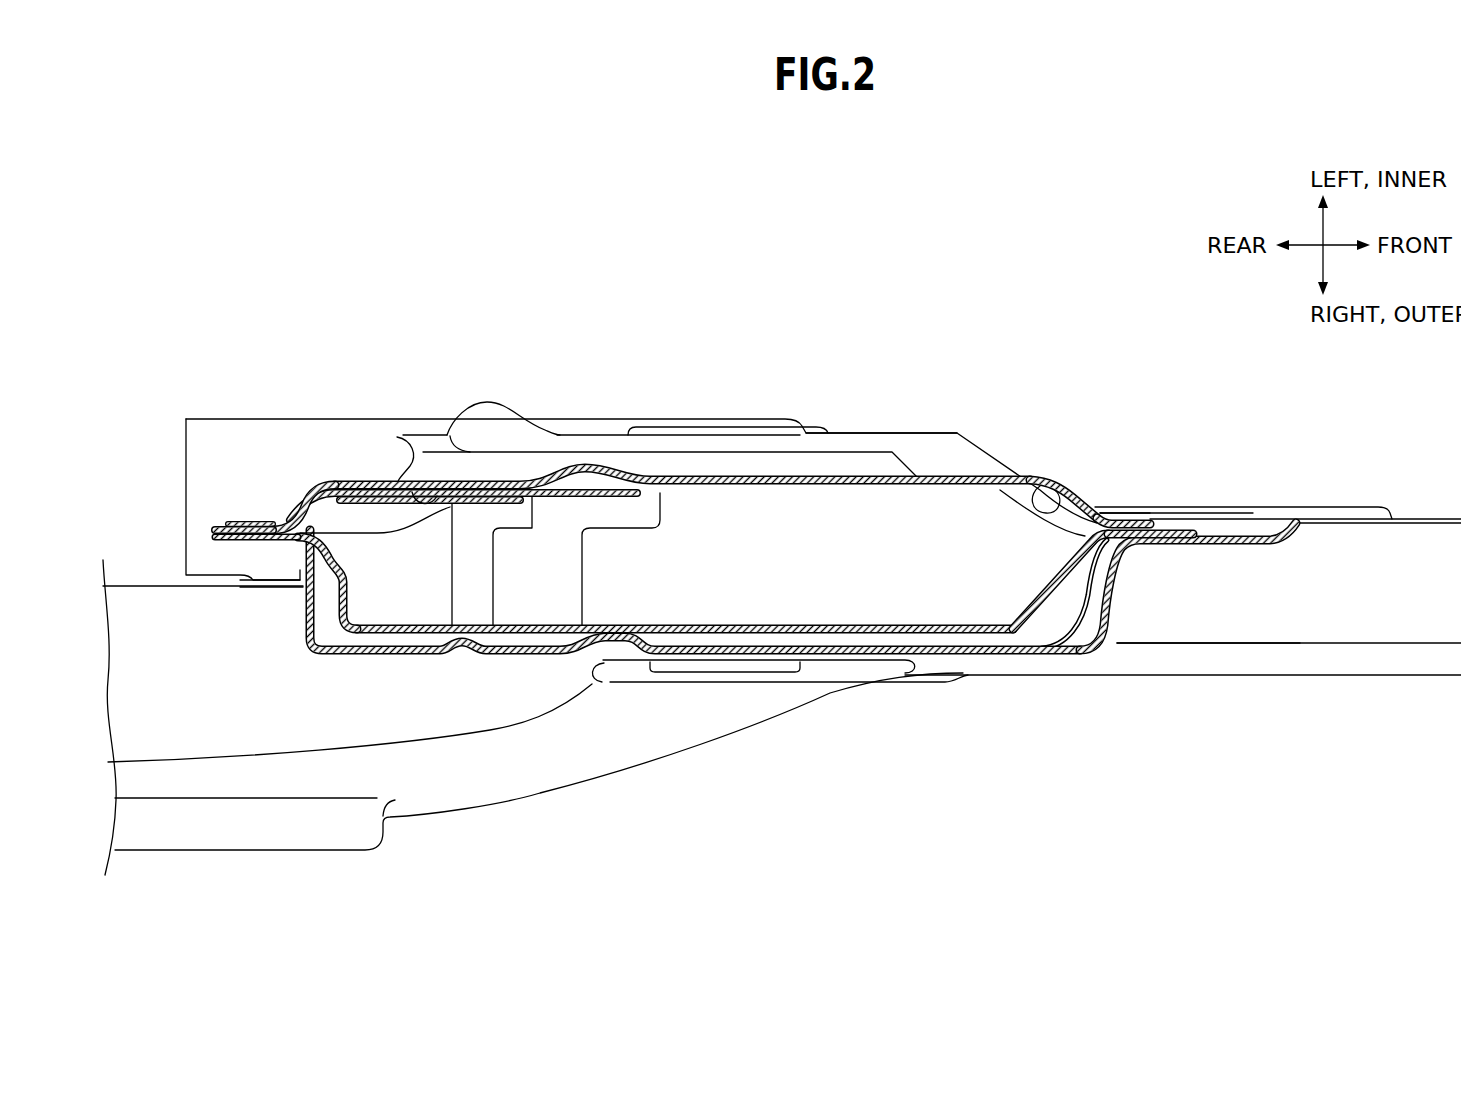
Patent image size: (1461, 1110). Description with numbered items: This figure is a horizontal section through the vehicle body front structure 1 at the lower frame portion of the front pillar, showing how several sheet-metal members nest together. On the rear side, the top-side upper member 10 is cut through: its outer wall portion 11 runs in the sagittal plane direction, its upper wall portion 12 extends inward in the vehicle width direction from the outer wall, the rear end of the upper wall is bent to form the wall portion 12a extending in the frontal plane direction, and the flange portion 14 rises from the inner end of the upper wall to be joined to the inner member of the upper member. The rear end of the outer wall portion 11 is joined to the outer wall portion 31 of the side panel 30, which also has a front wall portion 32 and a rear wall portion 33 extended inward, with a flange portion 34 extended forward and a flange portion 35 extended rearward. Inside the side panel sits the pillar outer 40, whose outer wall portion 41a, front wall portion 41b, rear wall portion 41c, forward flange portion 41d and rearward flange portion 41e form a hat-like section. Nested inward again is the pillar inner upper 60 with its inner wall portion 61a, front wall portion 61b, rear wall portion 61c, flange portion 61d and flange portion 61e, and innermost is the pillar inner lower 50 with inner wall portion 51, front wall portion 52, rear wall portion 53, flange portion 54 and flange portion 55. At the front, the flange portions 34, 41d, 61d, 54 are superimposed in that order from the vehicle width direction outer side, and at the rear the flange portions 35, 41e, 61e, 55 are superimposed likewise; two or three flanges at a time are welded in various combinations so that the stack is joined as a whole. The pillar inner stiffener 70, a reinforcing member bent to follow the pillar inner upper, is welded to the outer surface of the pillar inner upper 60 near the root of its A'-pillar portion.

The vehicle body front structure 1 is at (946, 238).
The top-side upper member 10 is at (1398, 702).
The outer wall portion 11 is at (1300, 660).
The upper wall portion 12 is at (1420, 585).
The wall portion 12a is at (1160, 552).
The flange portion 14 is at (1278, 507).
The side panel 30 is at (708, 704).
The outer wall portion 31 is at (843, 654).
The front wall portion 32 is at (1110, 620).
The rear wall portion 33 is at (306, 608).
The flange portion 34 is at (1133, 546).
The flange portion 35 is at (242, 541).
The pillar outer 40 is at (703, 597).
The outer wall portion 41a is at (755, 620).
The front wall portion 41b is at (1050, 593).
The rear wall portion 41c is at (349, 585).
The flange portion 41d is at (1160, 530).
The flange portion 41e is at (212, 541).
The pillar inner lower 50 is at (738, 450).
The inner wall portion 51 is at (795, 472).
The front wall portion 52 is at (1067, 488).
The rear wall portion 53 is at (287, 496).
The flange portion 54 is at (1130, 515).
The flange portion 55 is at (260, 521).
The pillar inner upper 60 is at (870, 517).
The inner wall portion 61a is at (770, 494).
The front wall portion 61b is at (1035, 485).
The rear wall portion 61c is at (300, 486).
The flange portion 61d is at (1110, 520).
The flange portion 61e is at (212, 530).
The pillar inner stiffener 70 is at (435, 480).